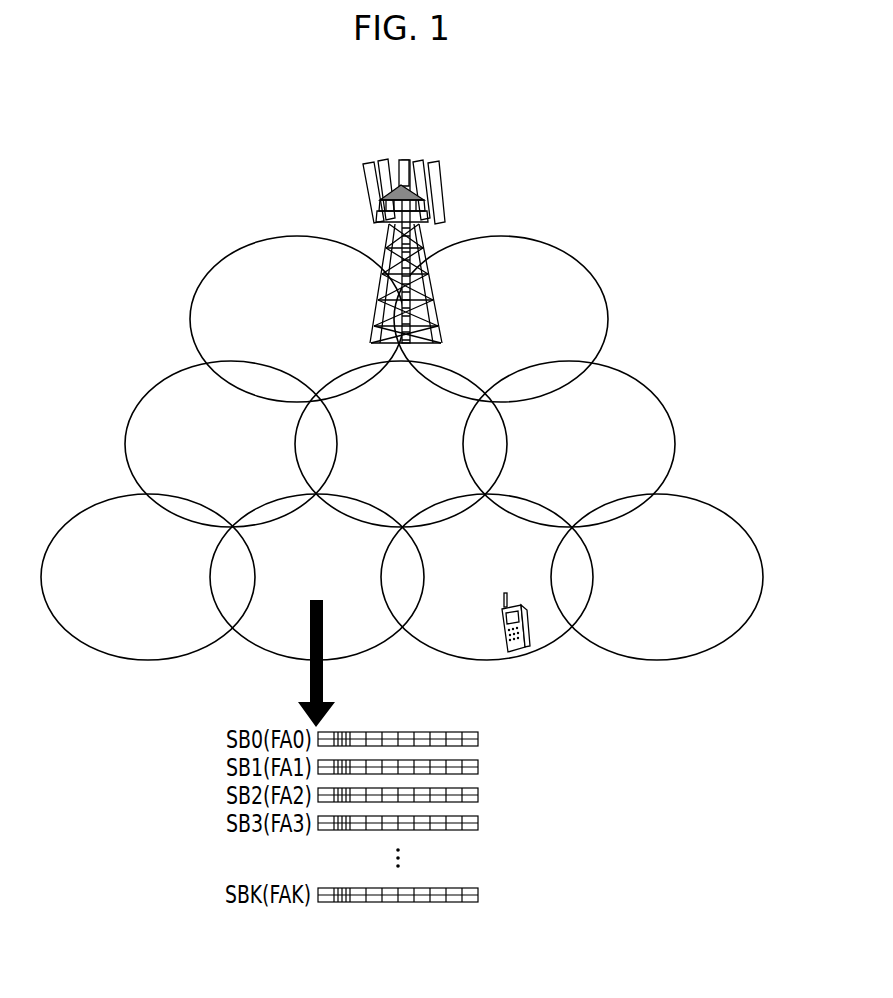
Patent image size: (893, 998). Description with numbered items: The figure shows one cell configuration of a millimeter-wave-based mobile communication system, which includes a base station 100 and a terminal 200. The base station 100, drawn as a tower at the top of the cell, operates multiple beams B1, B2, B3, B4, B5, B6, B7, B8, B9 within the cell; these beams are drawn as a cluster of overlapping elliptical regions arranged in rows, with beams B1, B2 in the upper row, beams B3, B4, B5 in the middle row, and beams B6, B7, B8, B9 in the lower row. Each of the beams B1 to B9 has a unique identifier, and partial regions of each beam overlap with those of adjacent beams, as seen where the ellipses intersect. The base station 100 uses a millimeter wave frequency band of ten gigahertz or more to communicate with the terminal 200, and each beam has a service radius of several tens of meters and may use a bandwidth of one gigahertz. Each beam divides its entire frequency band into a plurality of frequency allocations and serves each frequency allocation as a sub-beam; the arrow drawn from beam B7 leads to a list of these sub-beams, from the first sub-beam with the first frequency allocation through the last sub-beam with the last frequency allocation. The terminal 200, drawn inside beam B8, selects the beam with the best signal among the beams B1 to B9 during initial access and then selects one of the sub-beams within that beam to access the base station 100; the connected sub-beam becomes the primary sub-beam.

The base station 100 is at (445, 186).
The terminal 200 is at (527, 638).
The beam B1 is at (297, 319).
The beam B2 is at (501, 319).
The beam B3 is at (231, 444).
The beam B4 is at (401, 444).
The beam B5 is at (569, 444).
The beam B6 is at (148, 577).
The beam B7 is at (317, 577).
The beam B8 is at (487, 577).
The beam B9 is at (657, 577).